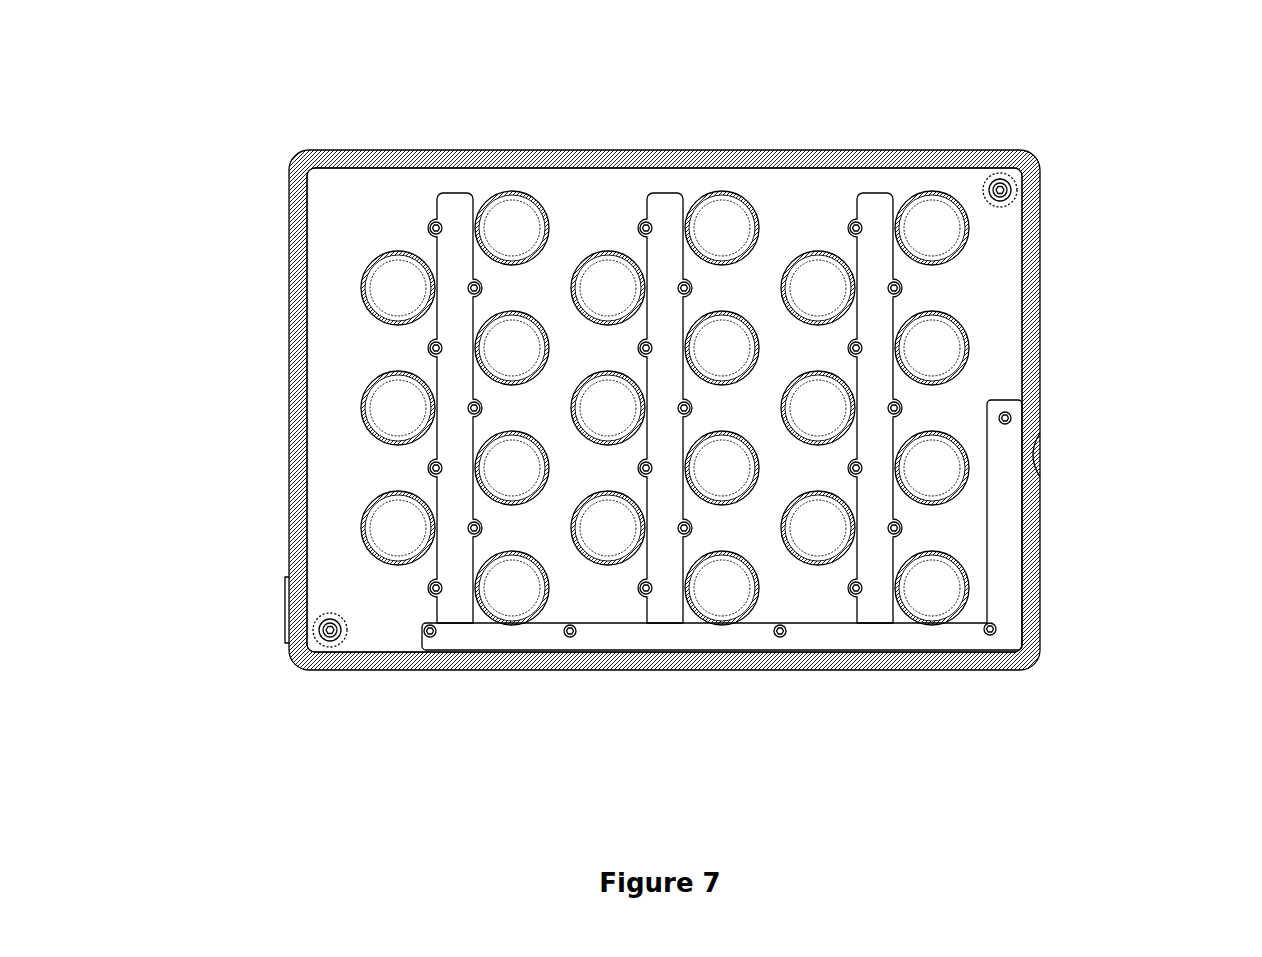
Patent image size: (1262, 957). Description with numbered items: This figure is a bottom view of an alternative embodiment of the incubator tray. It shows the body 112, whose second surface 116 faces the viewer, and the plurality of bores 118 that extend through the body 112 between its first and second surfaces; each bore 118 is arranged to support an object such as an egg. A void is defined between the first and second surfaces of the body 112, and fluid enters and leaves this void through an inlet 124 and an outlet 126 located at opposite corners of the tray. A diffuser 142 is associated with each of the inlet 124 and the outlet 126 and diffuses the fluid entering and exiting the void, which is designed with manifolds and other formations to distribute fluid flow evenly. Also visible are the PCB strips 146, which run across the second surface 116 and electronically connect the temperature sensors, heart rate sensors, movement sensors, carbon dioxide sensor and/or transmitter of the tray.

The body 112 is at (1042, 333).
The second surface 116 is at (788, 200).
The bores 118 is at (712, 218).
The inlet 124 is at (305, 656).
The outlet 126 is at (1012, 201).
The diffuser 142 is at (1001, 176).
The PCB strips 146 is at (875, 598).